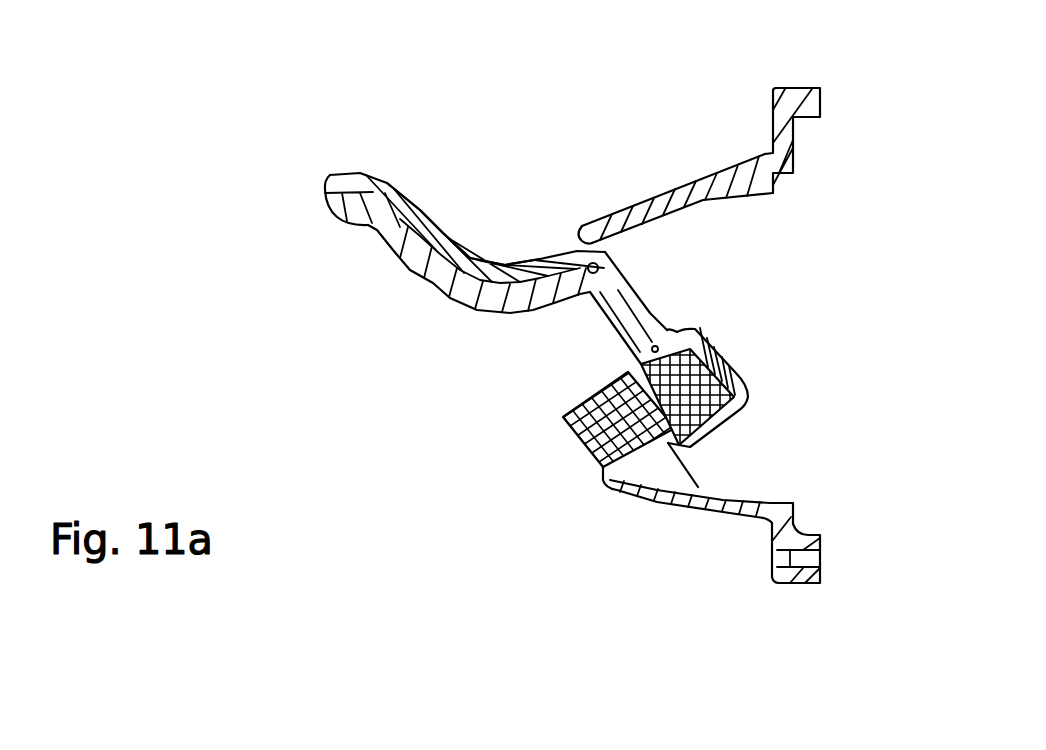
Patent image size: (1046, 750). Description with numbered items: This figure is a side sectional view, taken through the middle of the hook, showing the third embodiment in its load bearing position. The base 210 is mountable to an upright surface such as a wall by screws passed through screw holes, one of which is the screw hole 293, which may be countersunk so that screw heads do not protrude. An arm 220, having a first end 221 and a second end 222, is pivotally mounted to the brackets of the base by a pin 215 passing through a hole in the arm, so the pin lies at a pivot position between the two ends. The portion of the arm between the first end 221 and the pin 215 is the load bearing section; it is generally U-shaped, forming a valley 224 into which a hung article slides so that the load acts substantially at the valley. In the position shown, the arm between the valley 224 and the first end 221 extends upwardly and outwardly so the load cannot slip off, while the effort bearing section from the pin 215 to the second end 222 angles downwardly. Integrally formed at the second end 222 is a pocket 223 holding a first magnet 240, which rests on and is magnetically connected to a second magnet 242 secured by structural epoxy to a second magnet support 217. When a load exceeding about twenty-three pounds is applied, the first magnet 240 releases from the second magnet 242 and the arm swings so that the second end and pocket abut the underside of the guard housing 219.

The base 210 is at (800, 100).
The pin 215 is at (600, 262).
The second magnet support 217 is at (603, 467).
The guard housing 219 is at (710, 187).
The arm 220 is at (467, 295).
The first end 221 is at (325, 200).
The second end 222 is at (666, 327).
The pocket 223 is at (722, 367).
The valley 224 is at (485, 253).
The first magnet 240 is at (727, 418).
The second magnet 242 is at (570, 425).
The screw hole 293 is at (782, 557).